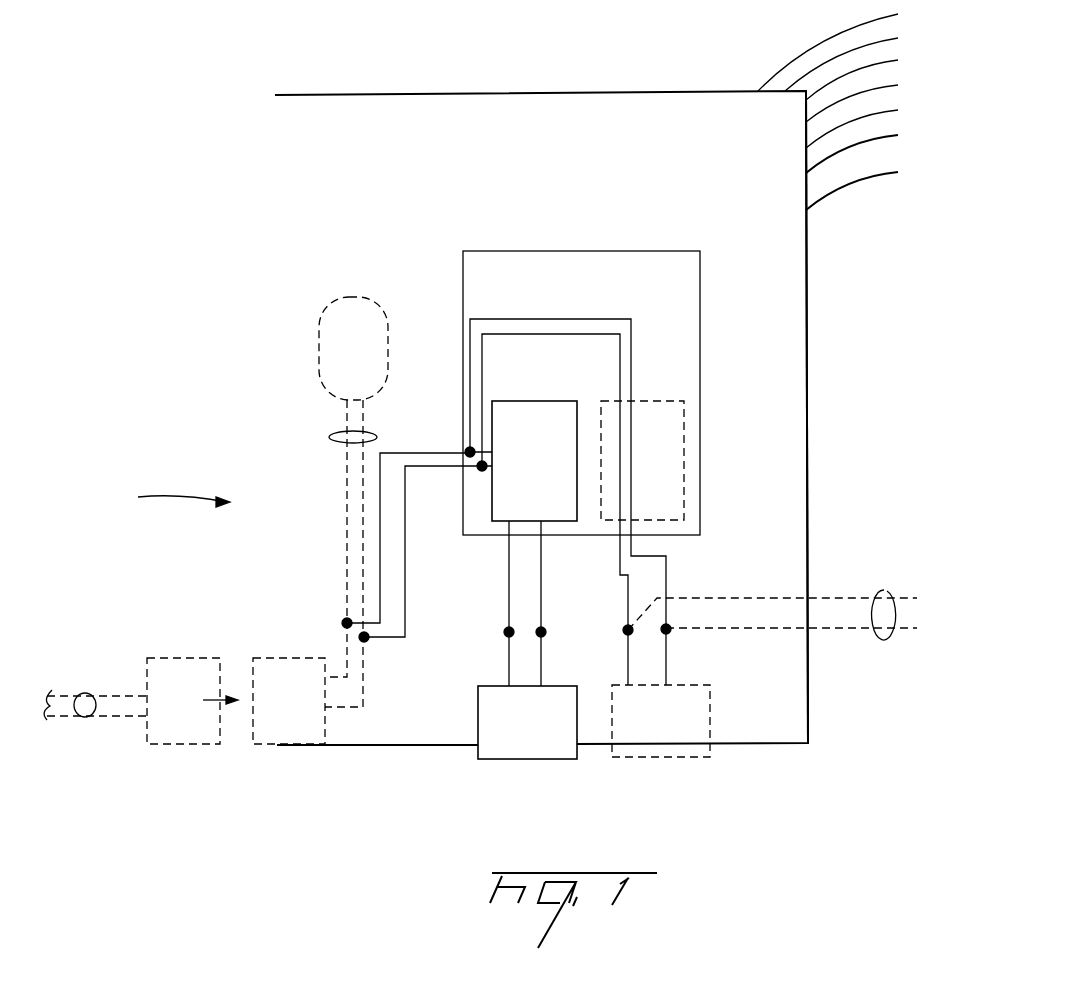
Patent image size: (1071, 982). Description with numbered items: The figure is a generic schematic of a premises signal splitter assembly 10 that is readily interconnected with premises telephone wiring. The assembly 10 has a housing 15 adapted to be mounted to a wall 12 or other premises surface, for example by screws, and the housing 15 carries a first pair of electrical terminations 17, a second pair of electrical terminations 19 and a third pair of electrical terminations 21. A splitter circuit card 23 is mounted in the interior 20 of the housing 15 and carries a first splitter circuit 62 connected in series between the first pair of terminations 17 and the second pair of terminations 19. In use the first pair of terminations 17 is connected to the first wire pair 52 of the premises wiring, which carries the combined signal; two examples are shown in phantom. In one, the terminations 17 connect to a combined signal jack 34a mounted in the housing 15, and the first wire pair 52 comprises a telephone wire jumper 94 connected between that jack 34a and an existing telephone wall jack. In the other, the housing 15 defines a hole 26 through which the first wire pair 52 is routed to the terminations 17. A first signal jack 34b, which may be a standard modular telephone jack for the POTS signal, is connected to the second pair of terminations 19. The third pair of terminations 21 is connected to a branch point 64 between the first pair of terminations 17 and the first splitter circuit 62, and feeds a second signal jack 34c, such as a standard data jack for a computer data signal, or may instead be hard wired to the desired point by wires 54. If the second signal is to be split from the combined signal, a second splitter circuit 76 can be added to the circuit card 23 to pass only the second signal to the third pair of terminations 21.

The assembly 10 is at (166, 497).
The wall 12 is at (843, 183).
The housing 15 is at (807, 468).
The first pair of electrical terminations 17 is at (364, 637).
The second pair of electrical terminations 19 is at (541, 632).
The interior 20 is at (795, 363).
The third pair of electrical terminations 21 is at (666, 629).
The splitter circuit card 23 is at (528, 250).
The hole 26 is at (350, 333).
The combined signal jack 34a is at (308, 745).
The first signal jack 34b is at (523, 748).
The second signal jack 34c is at (647, 757).
The first wire pair 52 is at (340, 434).
The wires 54 is at (887, 597).
The first splitter circuit 62 is at (548, 476).
The branch point 64 is at (482, 466).
The second splitter circuit 76 is at (684, 453).
The telephone wire jumper 94 is at (133, 717).